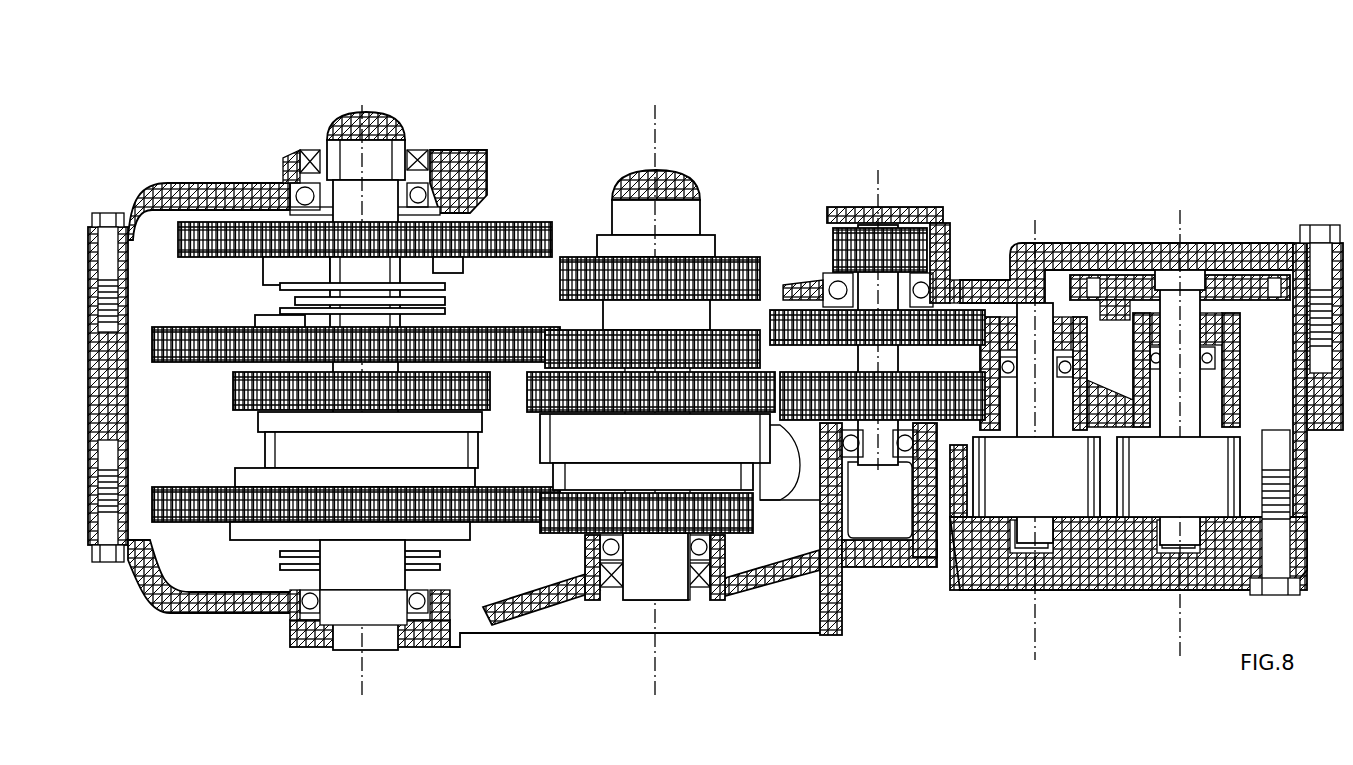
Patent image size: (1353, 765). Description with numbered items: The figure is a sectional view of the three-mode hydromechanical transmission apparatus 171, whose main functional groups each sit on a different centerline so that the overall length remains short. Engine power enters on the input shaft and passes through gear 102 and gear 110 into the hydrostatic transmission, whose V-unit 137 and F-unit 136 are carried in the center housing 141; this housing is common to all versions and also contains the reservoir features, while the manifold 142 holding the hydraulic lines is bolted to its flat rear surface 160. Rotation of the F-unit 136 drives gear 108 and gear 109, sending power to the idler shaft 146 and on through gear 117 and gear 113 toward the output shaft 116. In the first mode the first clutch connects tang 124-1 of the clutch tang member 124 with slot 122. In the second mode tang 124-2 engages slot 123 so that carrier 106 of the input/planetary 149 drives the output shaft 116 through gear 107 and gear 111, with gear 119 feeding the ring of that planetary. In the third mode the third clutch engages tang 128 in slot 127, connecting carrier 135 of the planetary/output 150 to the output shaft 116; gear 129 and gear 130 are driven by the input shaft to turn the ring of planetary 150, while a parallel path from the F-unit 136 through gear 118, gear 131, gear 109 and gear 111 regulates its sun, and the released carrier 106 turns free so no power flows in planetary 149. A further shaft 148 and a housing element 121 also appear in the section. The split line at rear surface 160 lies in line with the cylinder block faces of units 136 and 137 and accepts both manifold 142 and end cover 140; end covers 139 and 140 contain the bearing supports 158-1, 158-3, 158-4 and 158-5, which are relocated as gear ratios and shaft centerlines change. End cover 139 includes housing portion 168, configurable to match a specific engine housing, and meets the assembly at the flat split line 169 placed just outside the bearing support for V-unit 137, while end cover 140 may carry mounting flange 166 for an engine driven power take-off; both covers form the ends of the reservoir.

The gear drive assembly 171 is at (245, 82).
The output shaft 116 is at (372, 110).
The tang 124-1 is at (345, 270).
The slot 122 is at (285, 245).
The slot 123 is at (283, 285).
The gear 113 is at (193, 232).
The split line 169 is at (145, 245).
The clutch tang member 124 is at (218, 327).
The gear 111 is at (272, 318).
The gear 131 is at (240, 382).
The carrier 135 is at (272, 445).
The center housing 141 is at (122, 425).
The gear 130 is at (200, 493).
The slot 127 is at (320, 540).
The tang 128 is at (320, 560).
The end cover 140 is at (307, 642).
The planetary/output 150 is at (368, 652).
The bearing support 158-3 is at (421, 645).
The bearing support 158-4 is at (438, 185).
The bearing support 158-5 is at (958, 255).
The bearing support 158-1 is at (935, 560).
The input/planetary 149 is at (651, 618).
The mounting flange 166 is at (783, 637).
The housing web 121 is at (673, 590).
The rear surface 160 is at (838, 622).
The idler shaft 146 is at (878, 470).
The carrier 106 is at (752, 500).
The gear 118 is at (818, 425).
The gear 129 is at (572, 524).
The gear 119 is at (558, 375).
The tang 124-2 is at (400, 436).
The gear 107 is at (583, 330).
The gear 102 is at (605, 268).
The housing portion 168 is at (477, 198).
The intermediate shaft 148 is at (623, 180).
The gear 108 is at (795, 320).
The gear 117 is at (867, 243).
The gear 109 is at (1003, 330).
The gear 110 is at (1108, 285).
The end cover 139 is at (1143, 253).
The manifold 142 is at (1015, 594).
The F-unit 136 is at (1063, 510).
The V-unit 137 is at (1153, 510).